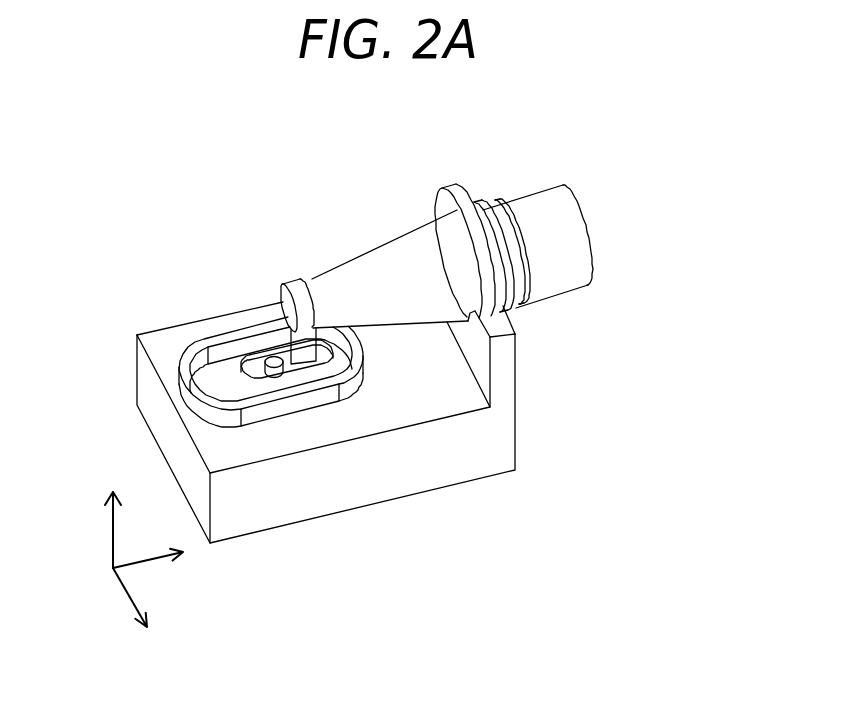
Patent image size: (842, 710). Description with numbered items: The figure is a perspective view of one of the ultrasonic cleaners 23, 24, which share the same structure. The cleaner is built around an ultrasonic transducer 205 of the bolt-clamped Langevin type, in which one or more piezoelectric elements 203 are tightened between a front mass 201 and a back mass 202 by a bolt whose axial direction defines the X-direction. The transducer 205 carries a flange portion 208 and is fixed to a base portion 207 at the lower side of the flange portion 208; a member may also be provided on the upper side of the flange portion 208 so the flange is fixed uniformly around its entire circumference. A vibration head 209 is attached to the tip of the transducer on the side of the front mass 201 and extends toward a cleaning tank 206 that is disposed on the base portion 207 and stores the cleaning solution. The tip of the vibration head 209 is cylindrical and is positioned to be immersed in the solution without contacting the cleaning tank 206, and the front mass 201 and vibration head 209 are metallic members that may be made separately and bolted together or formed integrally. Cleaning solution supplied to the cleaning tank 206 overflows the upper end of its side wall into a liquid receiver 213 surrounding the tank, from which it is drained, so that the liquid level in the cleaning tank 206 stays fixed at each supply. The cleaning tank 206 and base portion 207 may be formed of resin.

The ultrasonic cleaner 23 is at (91, 142).
The ultrasonic cleaner 24 is at (399, 384).
The front mass 201 is at (370, 313).
The back mass 202 is at (562, 285).
The piezoelectric element 203 is at (508, 318).
The ultrasonic transducer 205 is at (685, 382).
The cleaning tank 206 is at (273, 350).
The base portion 207 is at (353, 487).
The flange portion 208 is at (450, 188).
The vibration head 209 is at (285, 283).
The liquid receiver 213 is at (202, 390).